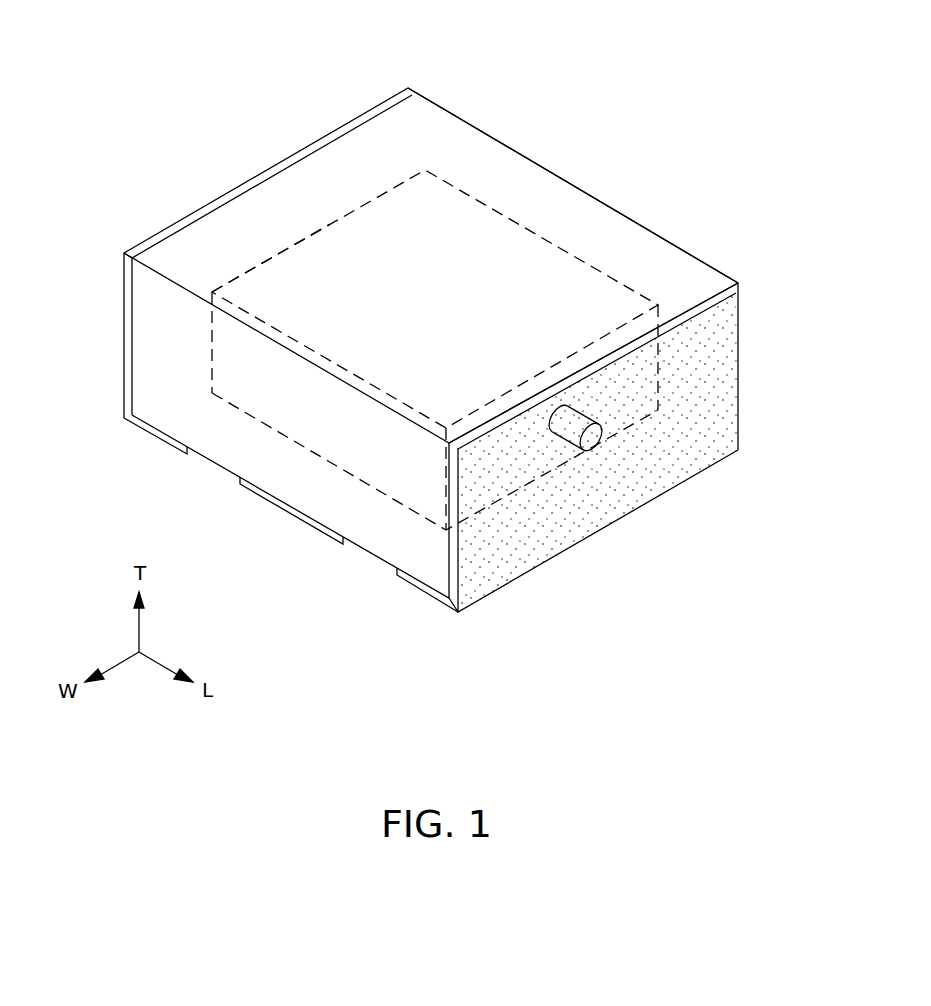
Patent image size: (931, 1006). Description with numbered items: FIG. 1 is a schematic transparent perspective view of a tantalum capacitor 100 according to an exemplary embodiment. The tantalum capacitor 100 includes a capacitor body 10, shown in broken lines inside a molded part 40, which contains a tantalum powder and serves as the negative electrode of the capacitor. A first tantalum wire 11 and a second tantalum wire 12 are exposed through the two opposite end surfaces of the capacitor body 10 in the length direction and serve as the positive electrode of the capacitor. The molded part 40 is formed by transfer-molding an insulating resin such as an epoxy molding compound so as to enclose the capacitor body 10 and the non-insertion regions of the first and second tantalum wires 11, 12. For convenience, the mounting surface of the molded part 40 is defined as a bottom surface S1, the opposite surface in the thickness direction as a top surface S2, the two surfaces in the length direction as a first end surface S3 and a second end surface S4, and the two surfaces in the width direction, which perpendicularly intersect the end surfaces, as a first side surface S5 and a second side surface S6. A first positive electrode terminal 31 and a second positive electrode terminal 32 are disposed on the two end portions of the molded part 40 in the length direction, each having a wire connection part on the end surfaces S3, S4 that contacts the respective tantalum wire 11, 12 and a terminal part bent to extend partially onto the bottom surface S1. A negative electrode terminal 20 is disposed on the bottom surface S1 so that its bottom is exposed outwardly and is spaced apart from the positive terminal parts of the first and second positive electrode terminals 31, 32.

The tantalum capacitor 100 is at (236, 22).
The capacitor body 10 is at (510, 230).
The first tantalum wire 11 is at (598, 415).
The second tantalum wire 12 is at (260, 262).
The negative electrode terminal 20 is at (258, 512).
The first positive electrode terminal 31 is at (412, 602).
The second positive electrode terminal 32 is at (136, 440).
The molded part 40 is at (462, 142).
The bottom surface S1 is at (579, 531).
The top surface S2 is at (335, 168).
The first end surface S3 is at (196, 240).
The second end surface S4 is at (731, 366).
The first side surface S5 is at (150, 352).
The second side surface S6 is at (654, 251).